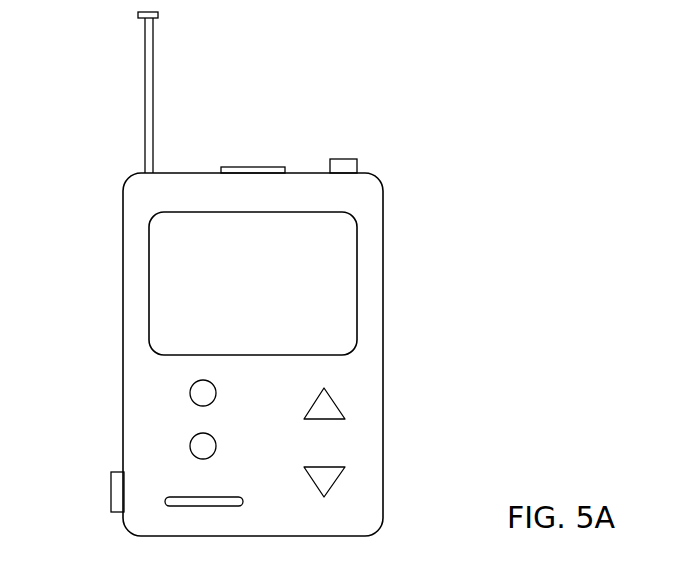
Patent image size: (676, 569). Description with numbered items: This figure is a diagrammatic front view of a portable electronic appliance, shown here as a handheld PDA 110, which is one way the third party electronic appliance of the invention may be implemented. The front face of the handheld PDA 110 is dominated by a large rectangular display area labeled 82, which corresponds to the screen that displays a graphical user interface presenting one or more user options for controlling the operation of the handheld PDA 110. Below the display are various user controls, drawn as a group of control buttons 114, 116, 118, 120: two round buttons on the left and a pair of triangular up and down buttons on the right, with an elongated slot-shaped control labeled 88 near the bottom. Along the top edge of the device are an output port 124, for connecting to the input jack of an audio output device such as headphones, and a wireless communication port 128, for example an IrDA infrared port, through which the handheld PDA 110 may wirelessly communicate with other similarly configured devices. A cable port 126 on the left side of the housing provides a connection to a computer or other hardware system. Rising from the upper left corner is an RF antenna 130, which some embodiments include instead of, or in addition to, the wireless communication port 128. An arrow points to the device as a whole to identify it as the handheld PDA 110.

The handheld PDA 110 is at (502, 203).
The display screen 82 is at (268, 294).
The RF antenna 130 is at (152, 97).
The wireless communication port 128 is at (252, 167).
The output port 124 is at (343, 159).
The cable port 126 is at (111, 490).
The control button 114 is at (191, 390).
The control button 116 is at (215, 447).
The control button 118 is at (315, 403).
The control button 120 is at (322, 462).
The bottom slot button 88 is at (243, 502).